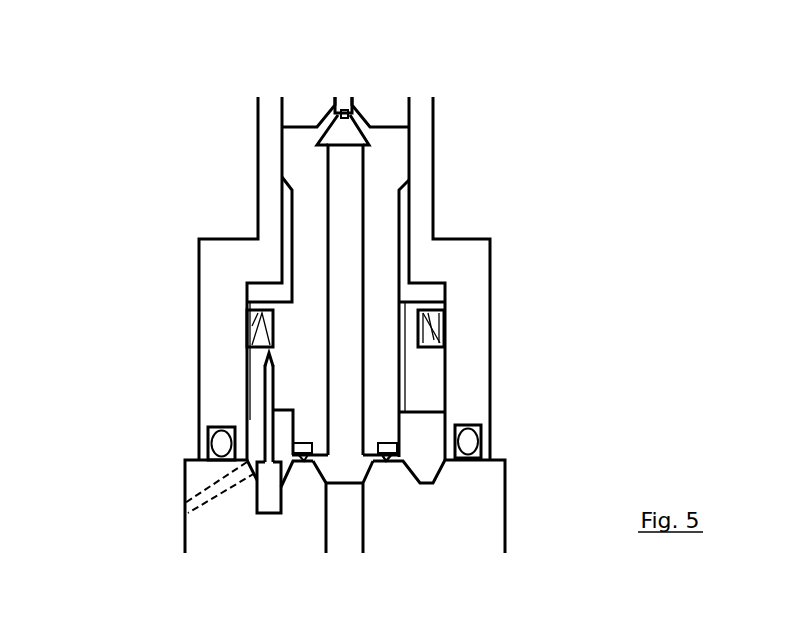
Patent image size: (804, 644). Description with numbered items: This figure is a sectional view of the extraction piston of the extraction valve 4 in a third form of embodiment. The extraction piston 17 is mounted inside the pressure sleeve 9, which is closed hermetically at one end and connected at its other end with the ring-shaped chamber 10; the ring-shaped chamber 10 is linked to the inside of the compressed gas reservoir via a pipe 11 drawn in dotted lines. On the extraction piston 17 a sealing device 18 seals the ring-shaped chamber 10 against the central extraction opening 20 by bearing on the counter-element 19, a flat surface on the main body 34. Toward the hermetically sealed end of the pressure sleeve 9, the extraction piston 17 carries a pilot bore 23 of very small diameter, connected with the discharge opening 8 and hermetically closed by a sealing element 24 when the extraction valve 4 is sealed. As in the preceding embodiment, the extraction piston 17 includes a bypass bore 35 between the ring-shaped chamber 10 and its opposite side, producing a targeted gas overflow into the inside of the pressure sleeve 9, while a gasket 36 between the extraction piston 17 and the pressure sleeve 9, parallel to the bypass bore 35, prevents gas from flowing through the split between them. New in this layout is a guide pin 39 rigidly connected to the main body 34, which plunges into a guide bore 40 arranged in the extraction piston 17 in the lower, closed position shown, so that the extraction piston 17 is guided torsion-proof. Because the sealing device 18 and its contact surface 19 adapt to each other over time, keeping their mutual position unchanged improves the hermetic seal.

The extraction valve 4 is at (339, 324).
The discharge opening 8 is at (338, 192).
The pressure sleeve 9 is at (219, 266).
The ring-shaped chamber 10 is at (255, 450).
The pipe 11 is at (185, 502).
The extraction piston 17 is at (395, 227).
The sealing device 18 is at (397, 443).
The counter-element 19 is at (380, 462).
The central extraction opening 20 is at (348, 530).
The pilot bore 23 is at (354, 116).
The sealing element 24 is at (344, 108).
The main body 34 is at (275, 532).
The bypass bore 35 is at (405, 333).
The gasket 36 is at (443, 330).
The guide pin 39 is at (268, 422).
The guide bore 40 is at (267, 357).